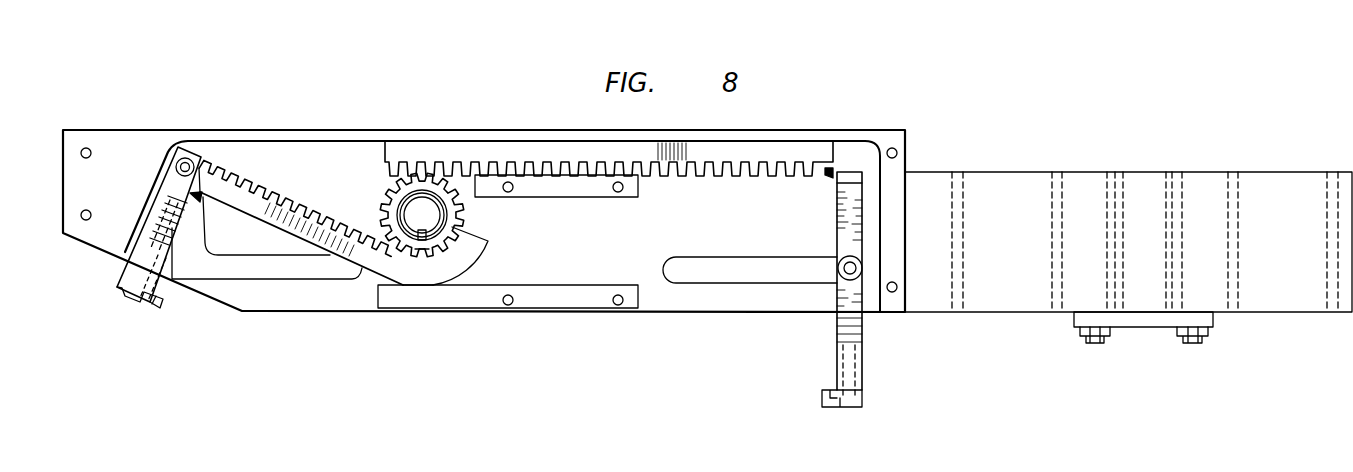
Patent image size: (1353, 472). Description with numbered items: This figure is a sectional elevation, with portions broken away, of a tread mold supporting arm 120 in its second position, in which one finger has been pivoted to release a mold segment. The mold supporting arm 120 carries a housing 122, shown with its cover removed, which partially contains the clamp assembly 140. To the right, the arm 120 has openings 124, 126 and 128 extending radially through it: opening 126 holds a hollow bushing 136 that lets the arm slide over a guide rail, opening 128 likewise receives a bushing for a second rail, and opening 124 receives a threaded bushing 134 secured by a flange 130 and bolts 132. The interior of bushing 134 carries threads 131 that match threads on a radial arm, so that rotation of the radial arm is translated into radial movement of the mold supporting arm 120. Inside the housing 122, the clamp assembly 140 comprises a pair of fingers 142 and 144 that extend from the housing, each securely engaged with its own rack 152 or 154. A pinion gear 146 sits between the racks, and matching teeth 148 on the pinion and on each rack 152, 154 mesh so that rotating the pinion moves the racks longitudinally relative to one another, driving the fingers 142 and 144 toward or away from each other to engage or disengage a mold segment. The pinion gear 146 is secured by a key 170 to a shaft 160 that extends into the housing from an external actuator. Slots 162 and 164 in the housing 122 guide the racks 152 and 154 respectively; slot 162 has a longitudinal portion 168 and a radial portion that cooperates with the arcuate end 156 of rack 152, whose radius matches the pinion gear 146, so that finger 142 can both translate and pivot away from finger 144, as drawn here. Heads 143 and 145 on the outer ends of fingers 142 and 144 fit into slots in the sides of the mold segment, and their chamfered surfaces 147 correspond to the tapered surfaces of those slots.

The mold supporting arm 120 is at (945, 328).
The housing 122 is at (245, 127).
The opening 124 is at (1170, 185).
The opening 126 is at (1050, 185).
The opening 128 is at (1322, 185).
The flange 130 is at (1215, 320).
The threads 131 is at (1165, 288).
The bolts 132 is at (1092, 344).
The threaded bushing 134 is at (1110, 185).
The hollow bushing 136 is at (958, 175).
The clamp assembly 140 is at (342, 167).
The finger 142 is at (165, 185).
The head 143 is at (130, 305).
The finger 144 is at (865, 356).
The head 145 is at (822, 400).
The pinion gear 146 is at (420, 178).
The chamfered surfaces 147 is at (158, 306).
The teeth 148 is at (470, 177).
The rack 152 is at (352, 256).
The rack 154 is at (547, 147).
The end of rack 156 is at (423, 242).
The shaft 160 is at (438, 222).
The slot 162 is at (195, 264).
The slot 164 is at (738, 270).
The longitudinal portion 168 is at (312, 278).
The key 170 is at (425, 258).